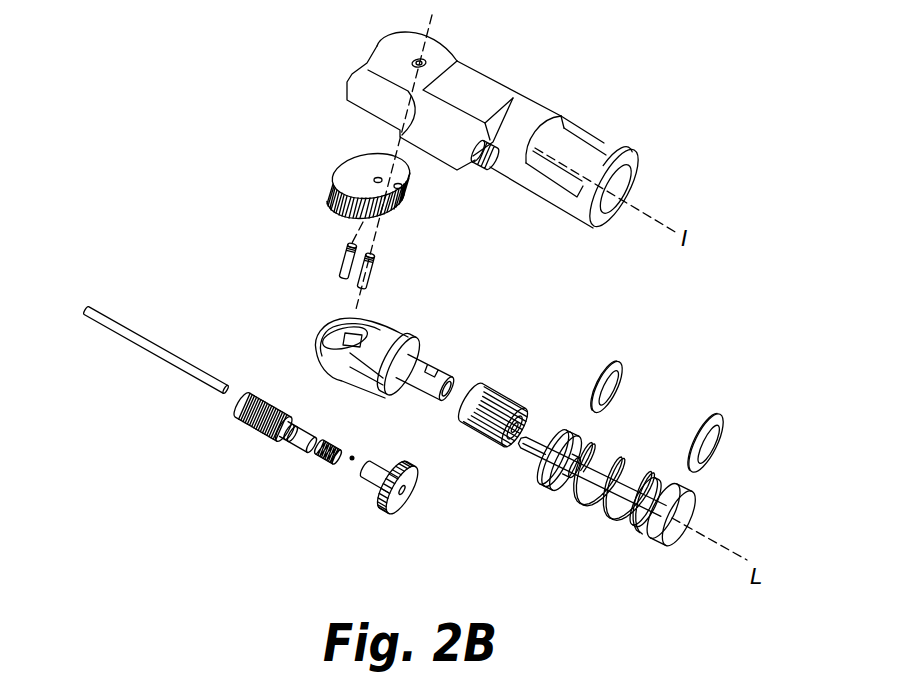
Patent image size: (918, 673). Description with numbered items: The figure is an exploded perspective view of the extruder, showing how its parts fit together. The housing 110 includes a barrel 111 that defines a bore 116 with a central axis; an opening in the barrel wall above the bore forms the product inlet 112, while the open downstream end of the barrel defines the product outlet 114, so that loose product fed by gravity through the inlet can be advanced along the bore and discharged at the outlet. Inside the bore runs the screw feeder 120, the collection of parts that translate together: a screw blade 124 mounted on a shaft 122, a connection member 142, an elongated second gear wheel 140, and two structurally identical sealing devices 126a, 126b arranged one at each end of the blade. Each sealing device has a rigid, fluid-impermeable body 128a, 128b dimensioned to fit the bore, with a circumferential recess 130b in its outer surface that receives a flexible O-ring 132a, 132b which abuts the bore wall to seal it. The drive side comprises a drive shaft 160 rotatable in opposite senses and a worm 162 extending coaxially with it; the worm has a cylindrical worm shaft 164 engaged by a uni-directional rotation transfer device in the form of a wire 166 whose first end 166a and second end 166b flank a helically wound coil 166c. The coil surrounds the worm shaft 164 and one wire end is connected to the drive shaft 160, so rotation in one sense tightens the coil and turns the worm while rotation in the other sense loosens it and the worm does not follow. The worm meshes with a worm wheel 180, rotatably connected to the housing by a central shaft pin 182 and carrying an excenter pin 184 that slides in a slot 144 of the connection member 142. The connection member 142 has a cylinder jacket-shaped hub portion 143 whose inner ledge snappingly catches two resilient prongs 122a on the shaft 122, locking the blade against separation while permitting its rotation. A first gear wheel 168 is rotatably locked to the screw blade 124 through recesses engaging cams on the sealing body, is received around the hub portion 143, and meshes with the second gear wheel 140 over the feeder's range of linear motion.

The housing 110 is at (373, 88).
The barrel 111 is at (533, 118).
The product inlet 112 is at (601, 125).
The product outlet 114 is at (645, 166).
The bore 116 is at (562, 177).
The screw feeder 120 is at (275, 296).
The shaft 122 is at (624, 489).
The resilient prongs 122a is at (538, 419).
The screw blade 124 is at (612, 508).
The upstream sealing device 126a is at (571, 386).
The downstream sealing device 126b is at (749, 418).
The body of upstream sealing device 128a is at (542, 477).
The body of downstream sealing device 128b is at (660, 542).
The circumferential recess 130b is at (548, 467).
The O-ring 132a is at (610, 365).
The O-ring 132b is at (708, 457).
The second gear wheel 140 is at (449, 438).
The connection member 142 is at (380, 348).
The hub portion 143 is at (450, 351).
The slot 144 is at (327, 345).
The drive shaft 160 is at (113, 327).
The worm 162 is at (240, 434).
The worm shaft 164 is at (297, 432).
The wire 166 is at (322, 467).
The first end of wire 166a is at (306, 485).
The second end of wire 166b is at (352, 458).
The helically wound coil 166c is at (330, 445).
The first gear wheel 168 is at (402, 508).
The worm wheel 180 is at (357, 172).
The central shaft pin 182 is at (351, 246).
The excenter pin 184 is at (372, 262).